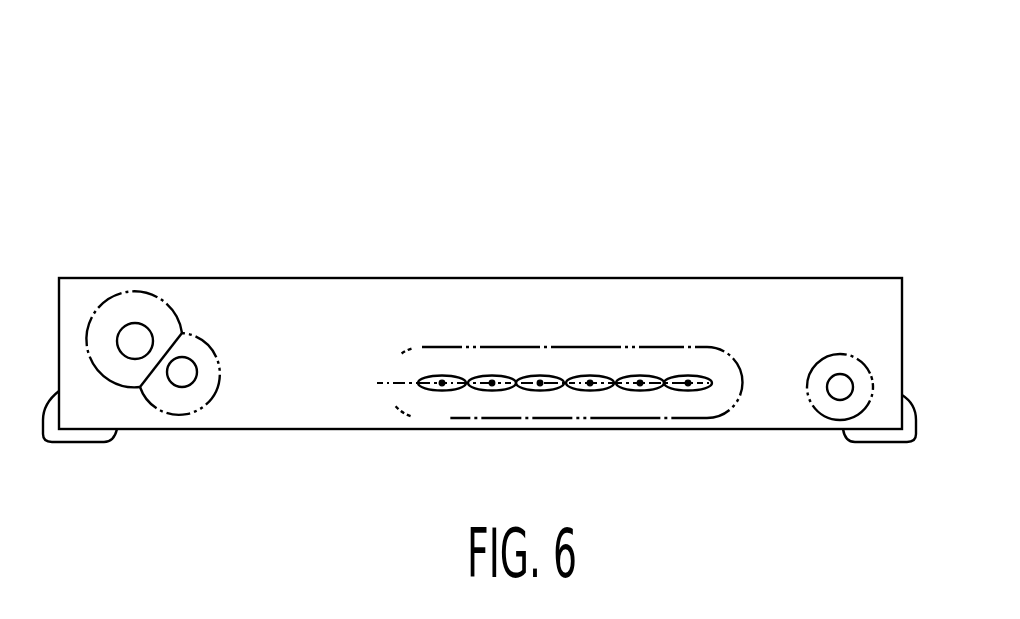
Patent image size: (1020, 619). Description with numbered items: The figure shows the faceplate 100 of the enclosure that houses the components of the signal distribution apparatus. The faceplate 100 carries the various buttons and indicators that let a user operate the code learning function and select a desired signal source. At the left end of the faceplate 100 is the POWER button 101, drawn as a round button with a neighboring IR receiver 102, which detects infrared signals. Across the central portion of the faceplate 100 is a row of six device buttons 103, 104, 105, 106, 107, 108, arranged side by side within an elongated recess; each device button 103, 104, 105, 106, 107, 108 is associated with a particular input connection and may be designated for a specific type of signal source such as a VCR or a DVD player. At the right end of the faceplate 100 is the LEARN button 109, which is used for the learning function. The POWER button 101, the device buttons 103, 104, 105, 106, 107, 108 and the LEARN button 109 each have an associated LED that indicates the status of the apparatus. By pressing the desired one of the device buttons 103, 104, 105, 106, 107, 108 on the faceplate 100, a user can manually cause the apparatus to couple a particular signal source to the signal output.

The faceplate 100 is at (618, 125).
The POWER button 101 is at (163, 303).
The IR receiver 102 is at (218, 359).
The device button 103 is at (442, 375).
The device button 104 is at (492, 375).
The device button 105 is at (540, 375).
The device button 106 is at (590, 375).
The device button 107 is at (640, 375).
The device button 108 is at (688, 375).
The LEARN button 109 is at (812, 403).